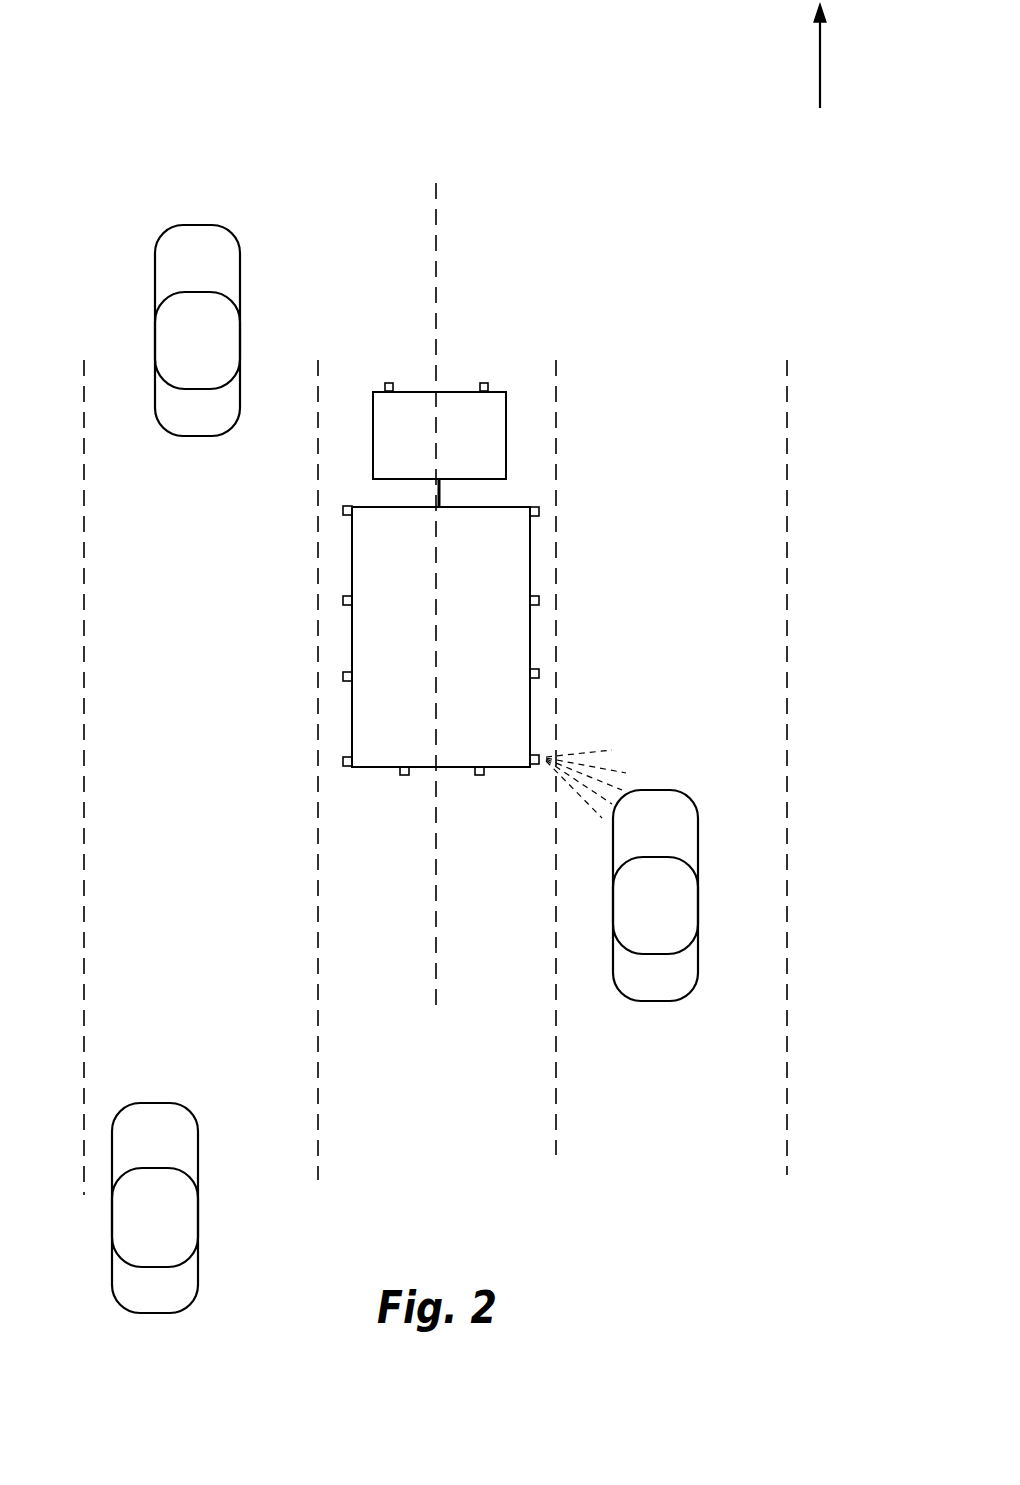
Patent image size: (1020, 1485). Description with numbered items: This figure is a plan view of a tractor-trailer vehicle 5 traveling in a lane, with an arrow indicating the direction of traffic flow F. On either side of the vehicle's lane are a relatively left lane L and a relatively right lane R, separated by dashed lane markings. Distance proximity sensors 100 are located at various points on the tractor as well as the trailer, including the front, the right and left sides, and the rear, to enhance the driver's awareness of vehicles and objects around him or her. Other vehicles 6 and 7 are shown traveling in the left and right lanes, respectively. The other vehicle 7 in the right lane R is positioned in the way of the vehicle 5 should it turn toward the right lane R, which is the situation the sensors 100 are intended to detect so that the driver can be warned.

The vehicle 5 is at (455, 408).
The other vehicle 6 is at (176, 1286).
The other vehicle 7 is at (653, 986).
The sensors 100 is at (242, 817).
The traffic flow F is at (707, 56).
The left lane L is at (283, 667).
The right lane R is at (753, 641).